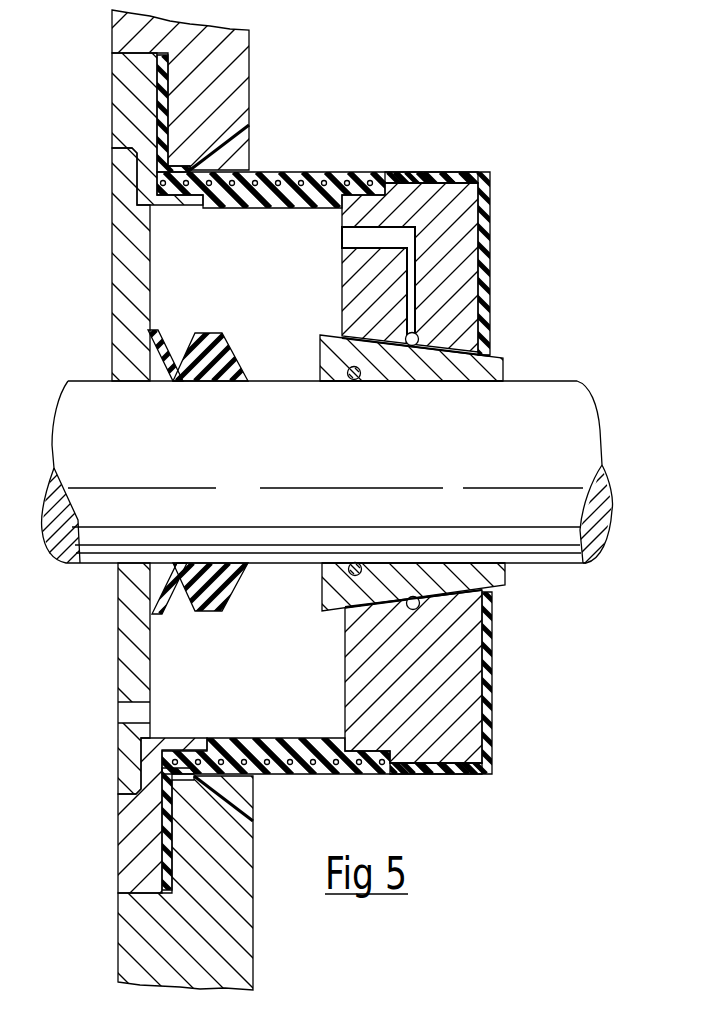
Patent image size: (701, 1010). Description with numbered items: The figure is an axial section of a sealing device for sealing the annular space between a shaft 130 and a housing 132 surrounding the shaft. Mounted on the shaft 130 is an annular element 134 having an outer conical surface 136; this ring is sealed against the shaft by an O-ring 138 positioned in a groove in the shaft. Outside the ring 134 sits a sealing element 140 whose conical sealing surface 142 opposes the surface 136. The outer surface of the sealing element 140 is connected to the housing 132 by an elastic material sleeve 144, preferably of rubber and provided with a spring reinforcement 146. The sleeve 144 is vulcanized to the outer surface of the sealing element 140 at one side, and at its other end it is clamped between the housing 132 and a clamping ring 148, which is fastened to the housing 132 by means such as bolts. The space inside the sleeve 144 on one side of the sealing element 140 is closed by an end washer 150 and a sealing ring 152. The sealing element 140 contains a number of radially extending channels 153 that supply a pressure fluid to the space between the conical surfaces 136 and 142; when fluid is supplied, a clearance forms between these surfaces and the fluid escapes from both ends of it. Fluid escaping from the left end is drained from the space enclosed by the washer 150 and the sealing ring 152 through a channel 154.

The shaft 130 is at (545, 383).
The housing 132 is at (246, 101).
The annular element 134 is at (320, 356).
The outer conical surface 136 is at (330, 336).
The O-ring 138 is at (352, 383).
The sealing element 140 is at (468, 207).
The conical sealing surface 142 is at (450, 383).
The elastic material sleeve 144 is at (385, 178).
The spring reinforcement 146 is at (322, 175).
The clamping ring 148 is at (117, 106).
The end washer 150 is at (118, 258).
The sealing ring 152 is at (195, 381).
The radially extending channels 153 is at (410, 282).
The channel 154 is at (122, 712).